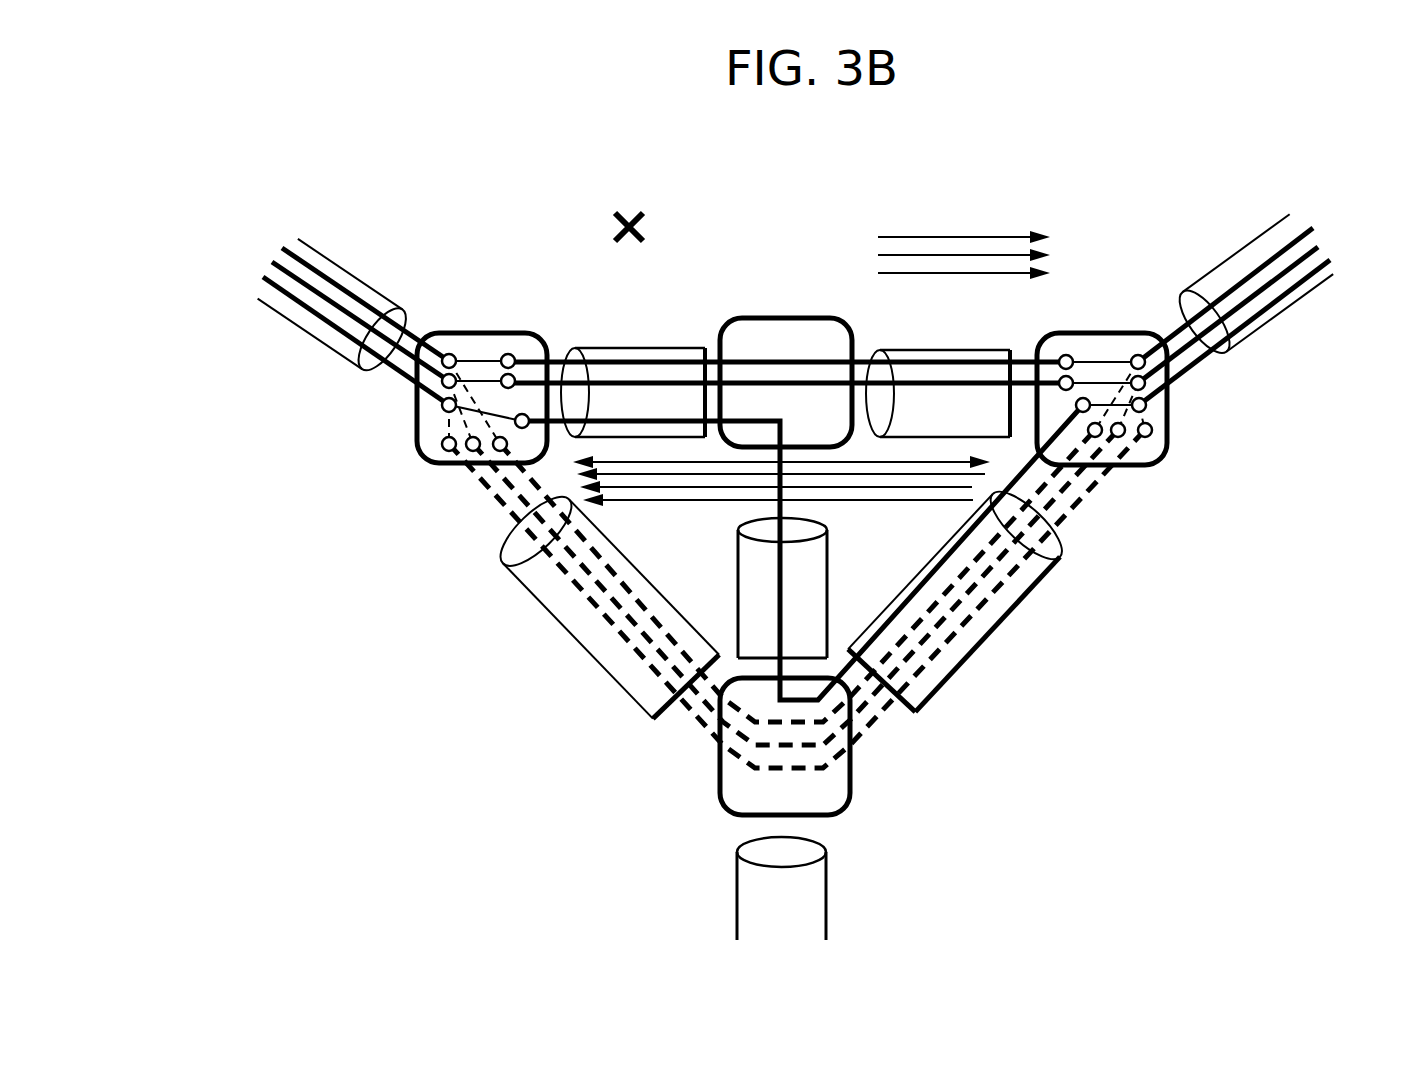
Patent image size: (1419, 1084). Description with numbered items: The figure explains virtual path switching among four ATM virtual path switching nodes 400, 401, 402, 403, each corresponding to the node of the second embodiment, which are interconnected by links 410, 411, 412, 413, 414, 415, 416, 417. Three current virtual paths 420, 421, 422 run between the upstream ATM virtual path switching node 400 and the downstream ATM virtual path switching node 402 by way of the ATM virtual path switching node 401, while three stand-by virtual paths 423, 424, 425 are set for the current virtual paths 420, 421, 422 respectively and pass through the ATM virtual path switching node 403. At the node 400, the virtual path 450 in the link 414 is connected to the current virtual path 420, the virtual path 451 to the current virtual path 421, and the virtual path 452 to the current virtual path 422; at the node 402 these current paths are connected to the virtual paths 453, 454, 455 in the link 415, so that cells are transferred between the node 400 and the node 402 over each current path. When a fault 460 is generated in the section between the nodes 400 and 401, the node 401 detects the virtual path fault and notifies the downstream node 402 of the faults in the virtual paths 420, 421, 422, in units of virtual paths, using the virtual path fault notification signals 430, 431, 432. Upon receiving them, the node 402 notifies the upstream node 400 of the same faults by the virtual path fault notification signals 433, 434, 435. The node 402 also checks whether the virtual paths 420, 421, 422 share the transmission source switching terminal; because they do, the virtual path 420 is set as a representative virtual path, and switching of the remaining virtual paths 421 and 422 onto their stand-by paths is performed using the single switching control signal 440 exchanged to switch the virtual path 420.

The ATM virtual path switching node 400 is at (478, 333).
The ATM virtual path switching node 401 is at (792, 318).
The ATM virtual path switching node 402 is at (1100, 333).
The ATM virtual path switching node 403 is at (850, 783).
The link 410 is at (570, 347).
The link 411 is at (933, 352).
The link 412 is at (557, 618).
The link 413 is at (1063, 545).
The link 414 is at (315, 342).
The link 415 is at (1253, 333).
The link 416 is at (827, 905).
The link 417 is at (827, 630).
The current virtual path 420 is at (628, 362).
The current virtual path 421 is at (672, 383).
The current virtual path 422 is at (778, 617).
The stand-by virtual path 423 is at (1025, 588).
The stand-by virtual path 424 is at (1002, 630).
The stand-by virtual path 425 is at (966, 673).
The virtual path fault notification signal 430 is at (904, 237).
The virtual path fault notification signal 431 is at (950, 255).
The virtual path fault notification signal 432 is at (985, 273).
The virtual path fault notification signal 433 is at (880, 474).
The virtual path fault notification signal 434 is at (666, 487).
The virtual path fault notification signal 435 is at (650, 500).
The switching control signal 440 is at (915, 462).
The virtual path 450 is at (293, 247).
The virtual path 451 is at (282, 262).
The virtual path 452 is at (266, 282).
The virtual path 453 is at (1302, 227).
The virtual path 454 is at (1314, 253).
The virtual path 455 is at (1330, 269).
The fault 460 is at (620, 218).